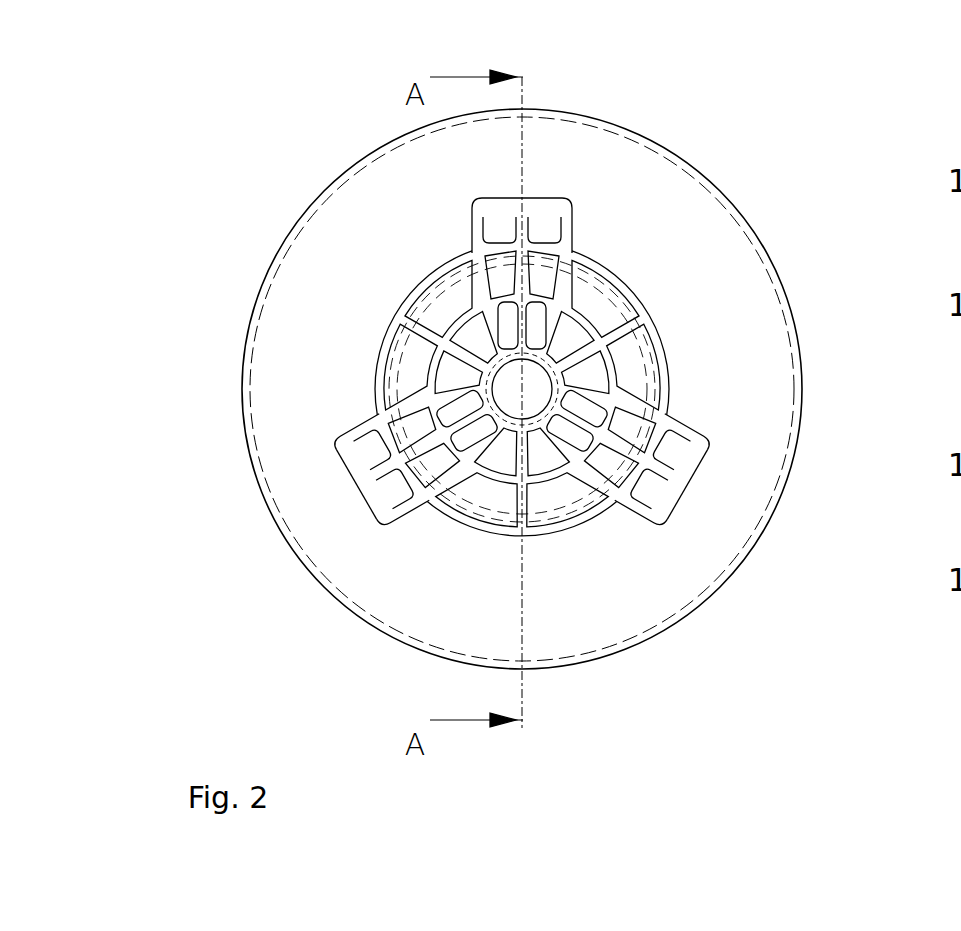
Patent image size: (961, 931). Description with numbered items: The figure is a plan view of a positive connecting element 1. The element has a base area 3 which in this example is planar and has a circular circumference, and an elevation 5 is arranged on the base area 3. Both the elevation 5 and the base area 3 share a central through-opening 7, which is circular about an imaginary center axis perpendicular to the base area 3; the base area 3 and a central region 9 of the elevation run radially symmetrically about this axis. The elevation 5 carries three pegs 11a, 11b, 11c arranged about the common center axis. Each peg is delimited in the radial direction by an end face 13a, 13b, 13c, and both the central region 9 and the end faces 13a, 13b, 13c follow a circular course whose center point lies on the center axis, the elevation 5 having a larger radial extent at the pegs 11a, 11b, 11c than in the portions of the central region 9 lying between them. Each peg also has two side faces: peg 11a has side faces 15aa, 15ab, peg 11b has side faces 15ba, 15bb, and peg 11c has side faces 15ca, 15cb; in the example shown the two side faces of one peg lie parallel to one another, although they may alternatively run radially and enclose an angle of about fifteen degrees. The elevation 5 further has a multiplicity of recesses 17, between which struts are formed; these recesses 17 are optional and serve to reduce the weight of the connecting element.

The positive connecting element 1 is at (559, 670).
The base area 3 is at (582, 635).
The elevation 5 is at (578, 460).
The central through-opening 7 is at (508, 385).
The central region 9 is at (663, 332).
The peg 11a is at (700, 463).
The peg 11b is at (355, 480).
The peg 11c is at (562, 197).
The end face 13a is at (692, 485).
The end face 13b is at (368, 503).
The end face 13c is at (540, 197).
The side face 15aa is at (657, 523).
The side face 15ab is at (684, 422).
The side face 15ba is at (362, 427).
The side face 15bb is at (410, 517).
The side face 15ca is at (574, 226).
The side face 15cb is at (471, 223).
The recess 17 is at (553, 500).